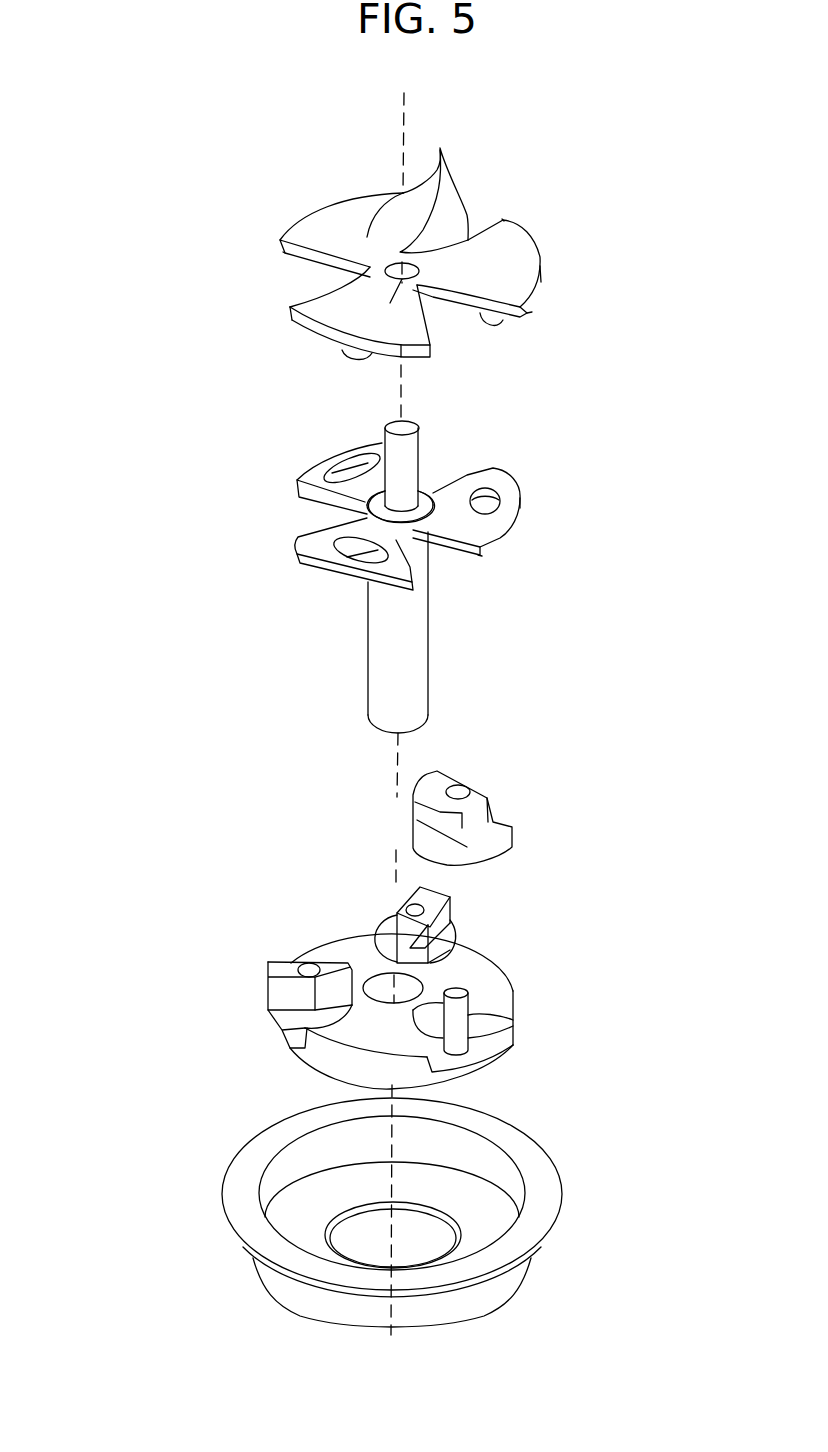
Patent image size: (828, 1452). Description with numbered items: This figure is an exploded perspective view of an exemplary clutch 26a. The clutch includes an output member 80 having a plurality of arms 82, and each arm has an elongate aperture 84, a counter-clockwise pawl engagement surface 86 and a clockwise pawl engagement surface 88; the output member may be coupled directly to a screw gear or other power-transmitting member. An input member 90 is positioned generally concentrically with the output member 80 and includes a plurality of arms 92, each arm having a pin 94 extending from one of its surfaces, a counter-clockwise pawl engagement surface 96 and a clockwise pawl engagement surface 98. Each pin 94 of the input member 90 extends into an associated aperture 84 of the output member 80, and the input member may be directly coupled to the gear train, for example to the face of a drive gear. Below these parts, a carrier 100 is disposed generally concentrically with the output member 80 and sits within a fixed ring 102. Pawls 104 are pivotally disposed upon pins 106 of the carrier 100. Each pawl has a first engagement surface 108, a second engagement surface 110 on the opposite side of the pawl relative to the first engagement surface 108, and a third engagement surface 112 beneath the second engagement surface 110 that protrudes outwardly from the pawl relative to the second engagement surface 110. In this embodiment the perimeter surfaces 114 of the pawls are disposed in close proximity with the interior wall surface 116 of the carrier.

The pump assembly 26a is at (153, 182).
The output member 80 is at (513, 461).
The arms 82 is at (305, 477).
The elongate aperture 84 is at (503, 500).
The counter-clockwise pawl engagement surface 86 is at (467, 482).
The clockwise pawl engagement surface 88 is at (482, 556).
The input member 90 is at (544, 241).
The arms 92 is at (440, 148).
The pin 94 is at (350, 360).
The counter-clockwise pawl engagement surface 96 is at (502, 219).
The clockwise pawl engagement surface 98 is at (532, 312).
The carrier 100 is at (505, 960).
The fixed ring 102 is at (543, 1168).
The pawls 104 is at (480, 796).
The pins 106 is at (398, 900).
The first engagement surface 108 is at (487, 802).
The second engagement surface 110 is at (420, 786).
The third engagement surface 112 is at (420, 815).
The perimeter surfaces 114 is at (487, 828).
The interior wall surface 116 is at (272, 1177).